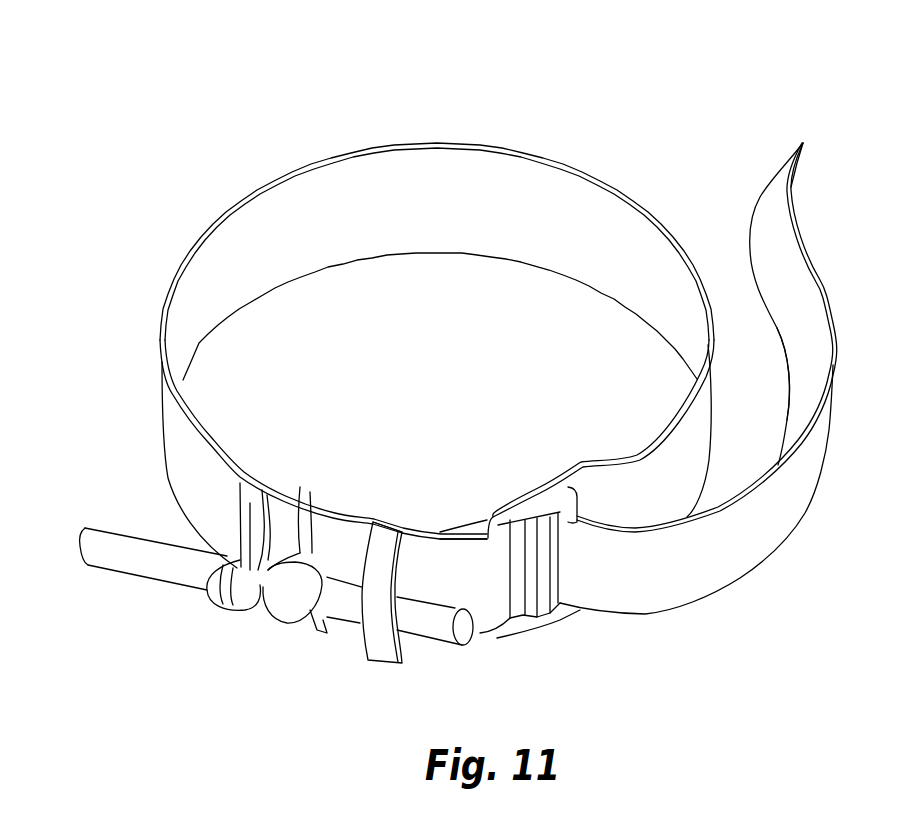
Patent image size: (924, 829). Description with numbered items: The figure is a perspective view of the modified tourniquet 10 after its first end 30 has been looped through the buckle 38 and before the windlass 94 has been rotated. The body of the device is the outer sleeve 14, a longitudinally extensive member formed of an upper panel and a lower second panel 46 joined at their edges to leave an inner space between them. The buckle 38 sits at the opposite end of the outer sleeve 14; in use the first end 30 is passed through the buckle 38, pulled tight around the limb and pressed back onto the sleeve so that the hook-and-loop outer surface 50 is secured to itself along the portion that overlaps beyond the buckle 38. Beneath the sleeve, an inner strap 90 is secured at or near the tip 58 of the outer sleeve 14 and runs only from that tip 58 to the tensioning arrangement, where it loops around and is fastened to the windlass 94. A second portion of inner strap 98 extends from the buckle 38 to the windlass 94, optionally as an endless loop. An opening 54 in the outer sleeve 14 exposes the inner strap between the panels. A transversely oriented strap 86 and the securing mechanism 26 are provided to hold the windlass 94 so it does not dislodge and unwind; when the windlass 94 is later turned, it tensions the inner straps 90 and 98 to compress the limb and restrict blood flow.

The tourniquet 10 is at (570, 102).
The outer sleeve 14 is at (185, 447).
The first end 30 is at (801, 200).
The tip 58 is at (778, 178).
The outer surface 50 is at (698, 425).
The buckle 38 is at (508, 517).
The windlass 94 is at (437, 630).
The transversely oriented strap 86 is at (388, 543).
The securing mechanism 26 is at (374, 513).
The second panel 46 is at (460, 530).
The inner strap 98 is at (310, 492).
The opening 54 is at (246, 484).
The inner strap 90 is at (258, 520).